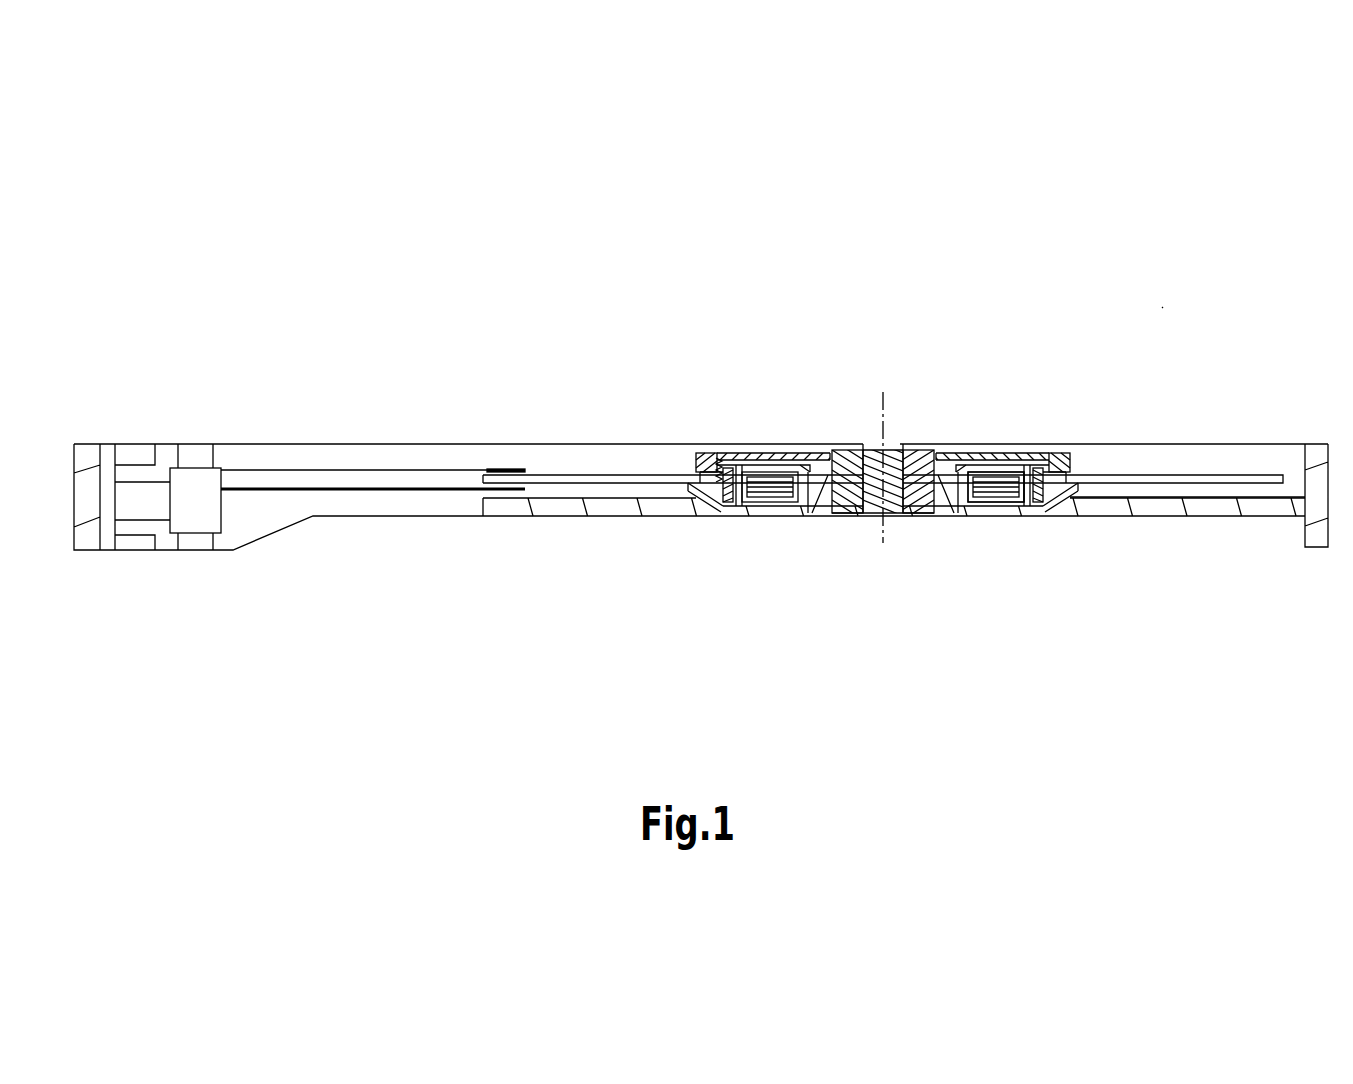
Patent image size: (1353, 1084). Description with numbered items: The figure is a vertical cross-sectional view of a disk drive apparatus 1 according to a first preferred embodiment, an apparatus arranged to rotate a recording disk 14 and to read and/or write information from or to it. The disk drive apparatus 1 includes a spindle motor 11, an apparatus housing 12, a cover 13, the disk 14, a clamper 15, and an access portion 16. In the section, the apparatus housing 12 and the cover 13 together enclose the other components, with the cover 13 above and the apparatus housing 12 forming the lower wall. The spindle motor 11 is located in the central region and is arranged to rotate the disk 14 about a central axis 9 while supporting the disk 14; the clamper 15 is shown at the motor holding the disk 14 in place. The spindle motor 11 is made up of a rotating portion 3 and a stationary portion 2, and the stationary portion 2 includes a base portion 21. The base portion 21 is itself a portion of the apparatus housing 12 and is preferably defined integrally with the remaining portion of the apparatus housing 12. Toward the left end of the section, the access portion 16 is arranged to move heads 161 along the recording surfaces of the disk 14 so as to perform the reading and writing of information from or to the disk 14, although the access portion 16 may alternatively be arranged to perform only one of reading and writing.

The disk drive apparatus 1 is at (1162, 308).
The stationary portion 2 is at (763, 520).
The rotating portion 3 is at (790, 447).
The central axis 9 is at (883, 415).
The spindle motor 11 is at (943, 447).
The apparatus housing 12 is at (343, 517).
The cover 13 is at (273, 445).
The disk 14 is at (1120, 478).
The clamper 15 is at (1060, 462).
The access portion 16 is at (408, 470).
The heads 161 is at (513, 472).
The base portion 21 is at (995, 516).